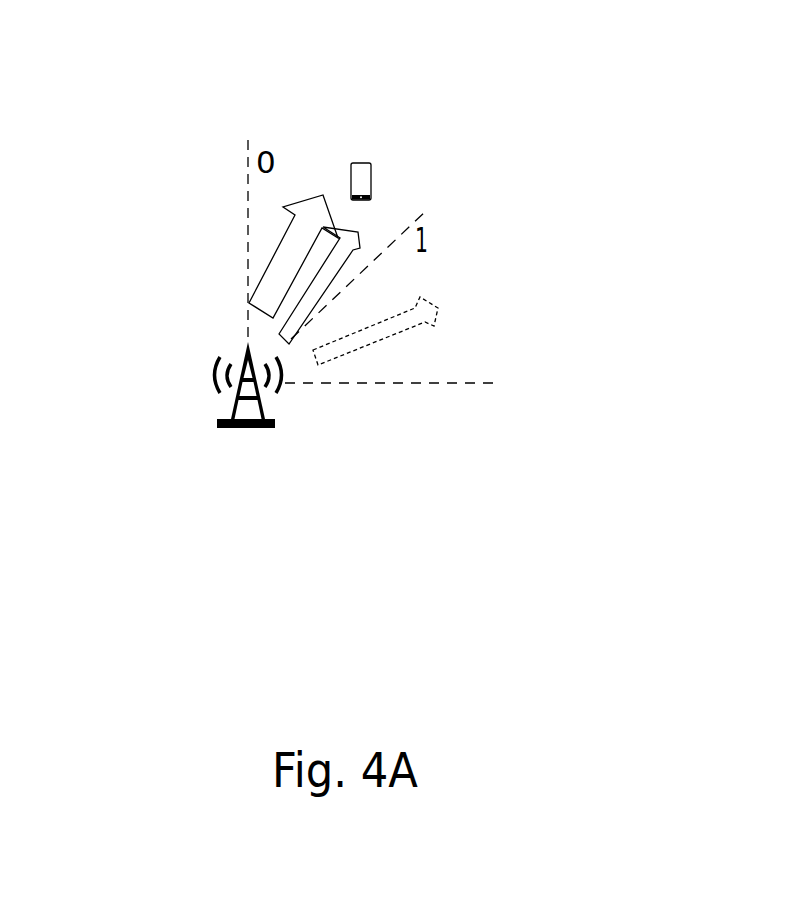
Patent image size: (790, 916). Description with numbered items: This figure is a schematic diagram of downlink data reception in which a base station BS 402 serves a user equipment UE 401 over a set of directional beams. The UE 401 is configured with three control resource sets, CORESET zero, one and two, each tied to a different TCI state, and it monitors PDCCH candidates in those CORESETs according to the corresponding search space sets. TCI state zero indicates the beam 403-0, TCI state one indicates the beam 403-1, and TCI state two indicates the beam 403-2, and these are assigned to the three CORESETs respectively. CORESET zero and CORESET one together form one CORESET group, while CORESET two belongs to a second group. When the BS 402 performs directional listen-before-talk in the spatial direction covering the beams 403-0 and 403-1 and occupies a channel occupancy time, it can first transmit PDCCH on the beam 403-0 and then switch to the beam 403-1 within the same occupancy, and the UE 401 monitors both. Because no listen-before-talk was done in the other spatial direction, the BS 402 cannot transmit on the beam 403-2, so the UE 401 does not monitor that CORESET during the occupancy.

The UE 401 is at (372, 161).
The BS 402 is at (220, 462).
The beam 403-0 is at (313, 193).
The beam 403-1 is at (358, 250).
The beam 403-2 is at (388, 349).